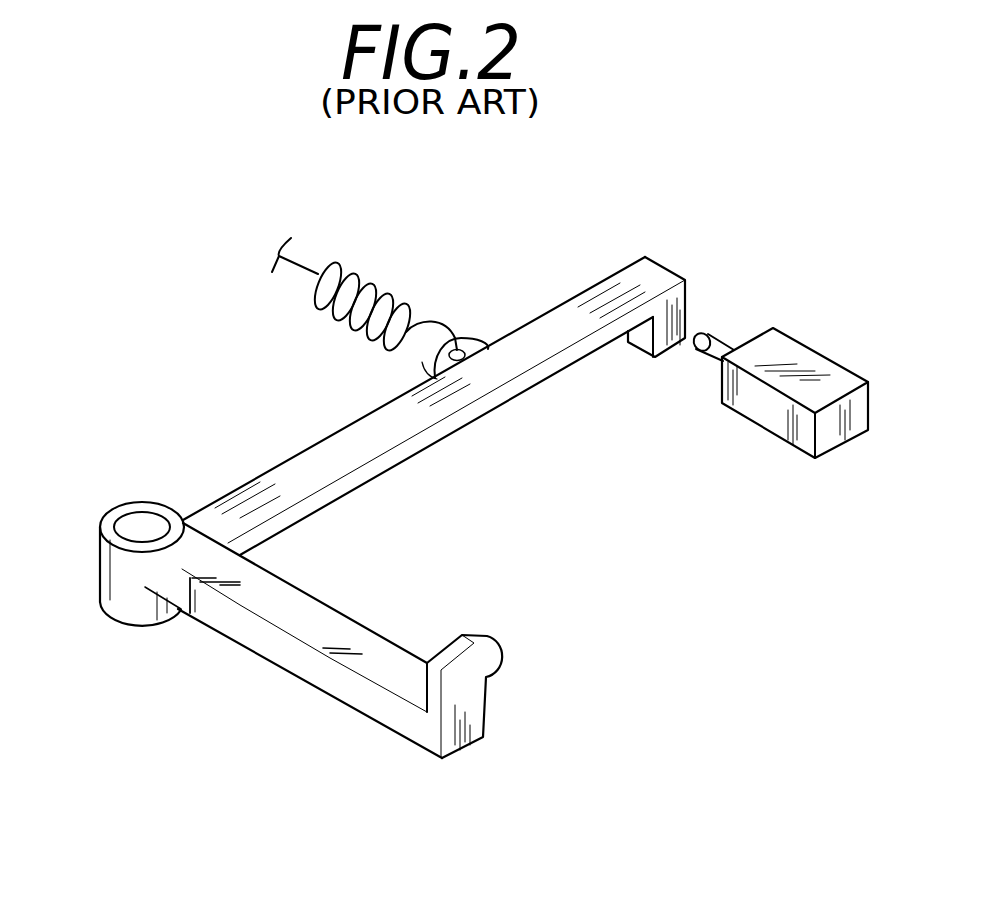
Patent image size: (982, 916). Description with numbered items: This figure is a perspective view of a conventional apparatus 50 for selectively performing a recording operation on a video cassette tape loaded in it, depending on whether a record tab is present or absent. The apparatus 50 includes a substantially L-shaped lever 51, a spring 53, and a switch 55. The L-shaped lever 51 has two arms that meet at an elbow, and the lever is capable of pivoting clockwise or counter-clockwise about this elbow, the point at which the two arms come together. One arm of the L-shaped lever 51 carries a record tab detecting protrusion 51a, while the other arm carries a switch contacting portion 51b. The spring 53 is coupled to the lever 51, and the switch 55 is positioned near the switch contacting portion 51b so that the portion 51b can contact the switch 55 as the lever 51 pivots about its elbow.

The apparatus 50 is at (546, 183).
The L-shaped lever 51 is at (128, 641).
The record tab detecting protrusion 51a is at (490, 657).
The switch contacting portion 51b is at (683, 318).
The spring 53 is at (333, 309).
The switch 55 is at (765, 402).